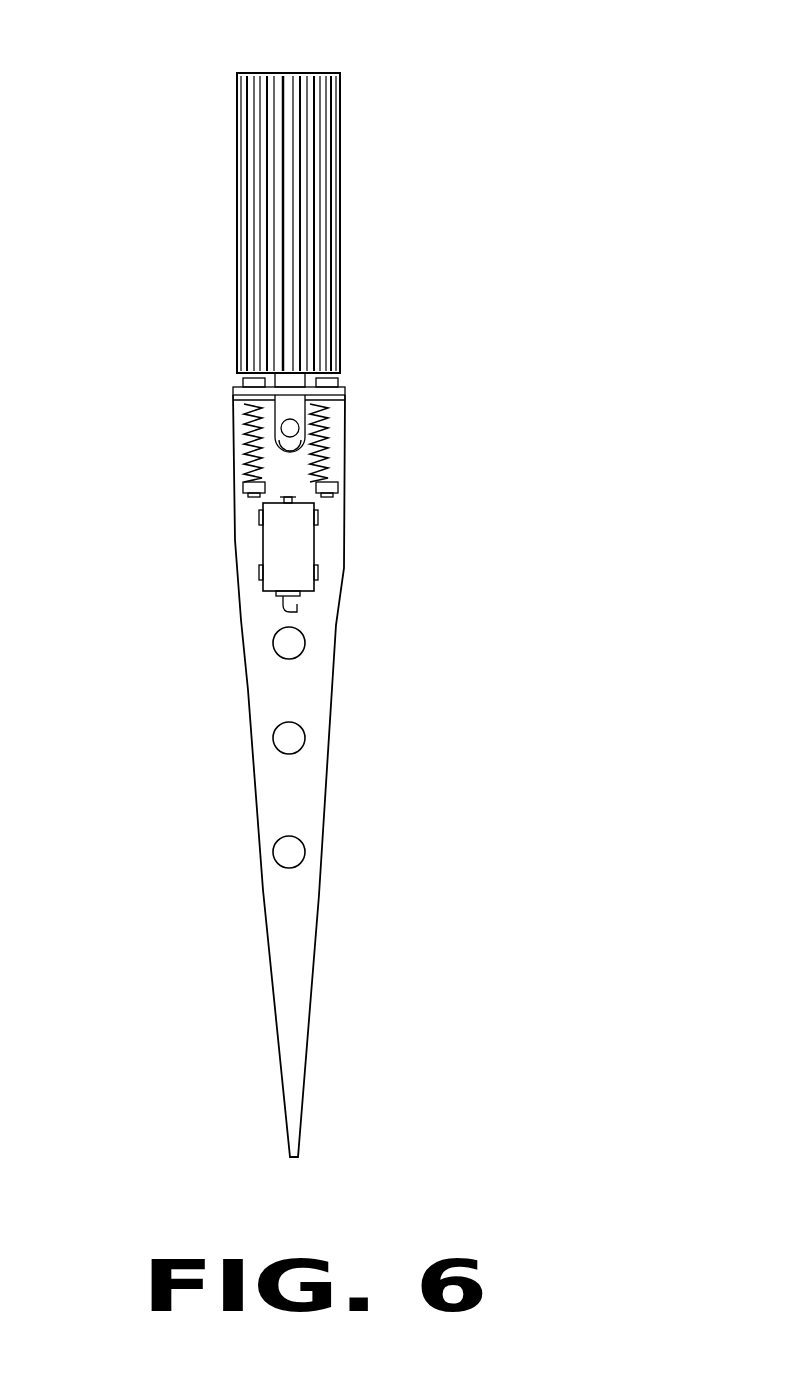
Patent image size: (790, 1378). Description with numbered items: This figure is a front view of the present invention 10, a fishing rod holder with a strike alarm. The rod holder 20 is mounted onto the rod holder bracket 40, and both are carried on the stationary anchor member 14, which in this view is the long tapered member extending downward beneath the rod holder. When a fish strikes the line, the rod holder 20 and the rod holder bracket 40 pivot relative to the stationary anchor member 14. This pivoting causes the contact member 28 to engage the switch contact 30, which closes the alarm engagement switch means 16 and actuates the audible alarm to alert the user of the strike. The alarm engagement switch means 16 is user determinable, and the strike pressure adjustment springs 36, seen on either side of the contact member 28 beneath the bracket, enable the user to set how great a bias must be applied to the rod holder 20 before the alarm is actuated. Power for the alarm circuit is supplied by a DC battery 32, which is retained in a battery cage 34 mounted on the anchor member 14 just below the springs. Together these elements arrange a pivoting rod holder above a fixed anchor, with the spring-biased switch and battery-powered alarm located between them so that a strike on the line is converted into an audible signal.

The present invention 10 is at (572, 111).
The stationary anchor member 14 is at (323, 733).
The alarm engagement switch means 16 is at (240, 410).
The rod holder 20 is at (341, 187).
The contact member 28 is at (288, 429).
The switch contact 30 is at (292, 445).
The DC battery 32 is at (273, 548).
The battery cage 34 is at (318, 570).
The strike pressure adjustment springs 36 is at (330, 423).
The rod holder bracket 40 is at (292, 378).